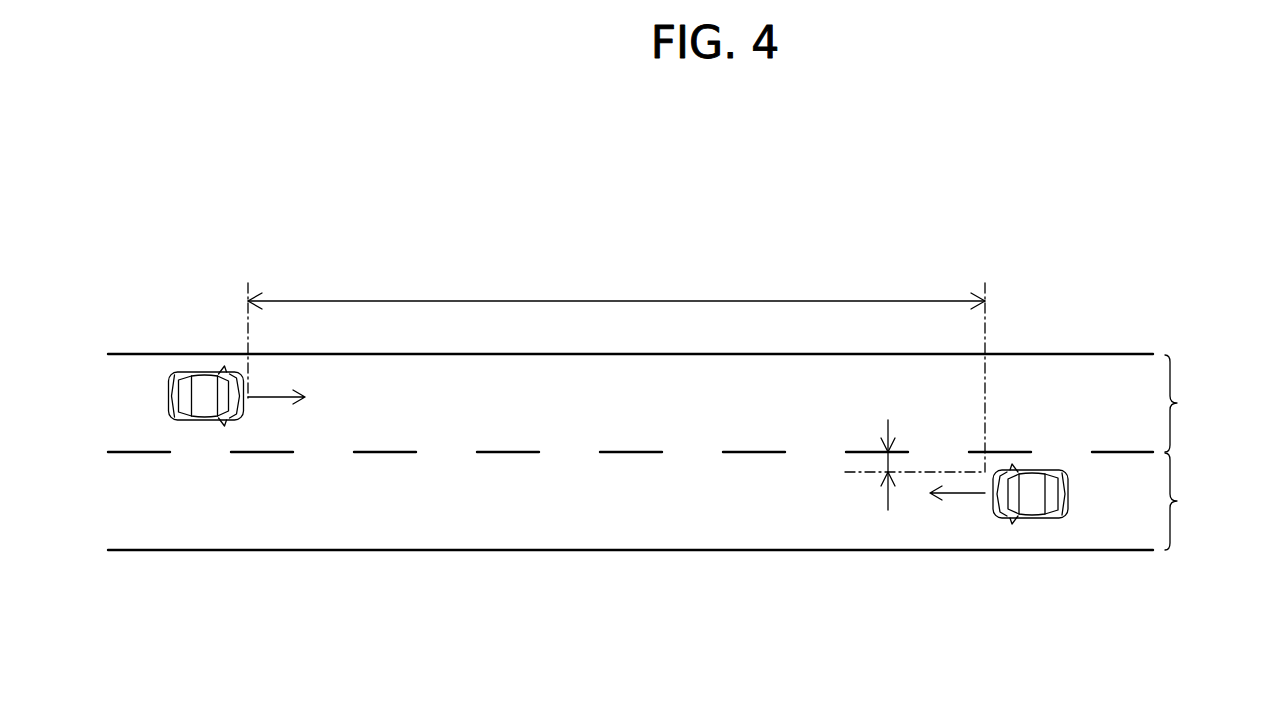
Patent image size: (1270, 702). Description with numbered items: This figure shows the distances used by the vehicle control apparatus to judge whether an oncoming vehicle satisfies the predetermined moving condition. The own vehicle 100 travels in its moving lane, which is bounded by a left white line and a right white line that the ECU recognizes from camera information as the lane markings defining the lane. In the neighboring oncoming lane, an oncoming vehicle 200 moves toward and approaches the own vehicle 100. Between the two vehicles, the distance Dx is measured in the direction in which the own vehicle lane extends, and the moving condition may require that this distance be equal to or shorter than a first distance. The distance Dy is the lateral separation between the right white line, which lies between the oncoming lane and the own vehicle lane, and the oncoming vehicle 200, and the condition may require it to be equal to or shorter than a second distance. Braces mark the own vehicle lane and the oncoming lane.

The own vehicle 100 is at (207, 372).
The oncoming vehicle 200 is at (1041, 520).
The distance Dx is at (616, 289).
The distance Dy is at (880, 463).